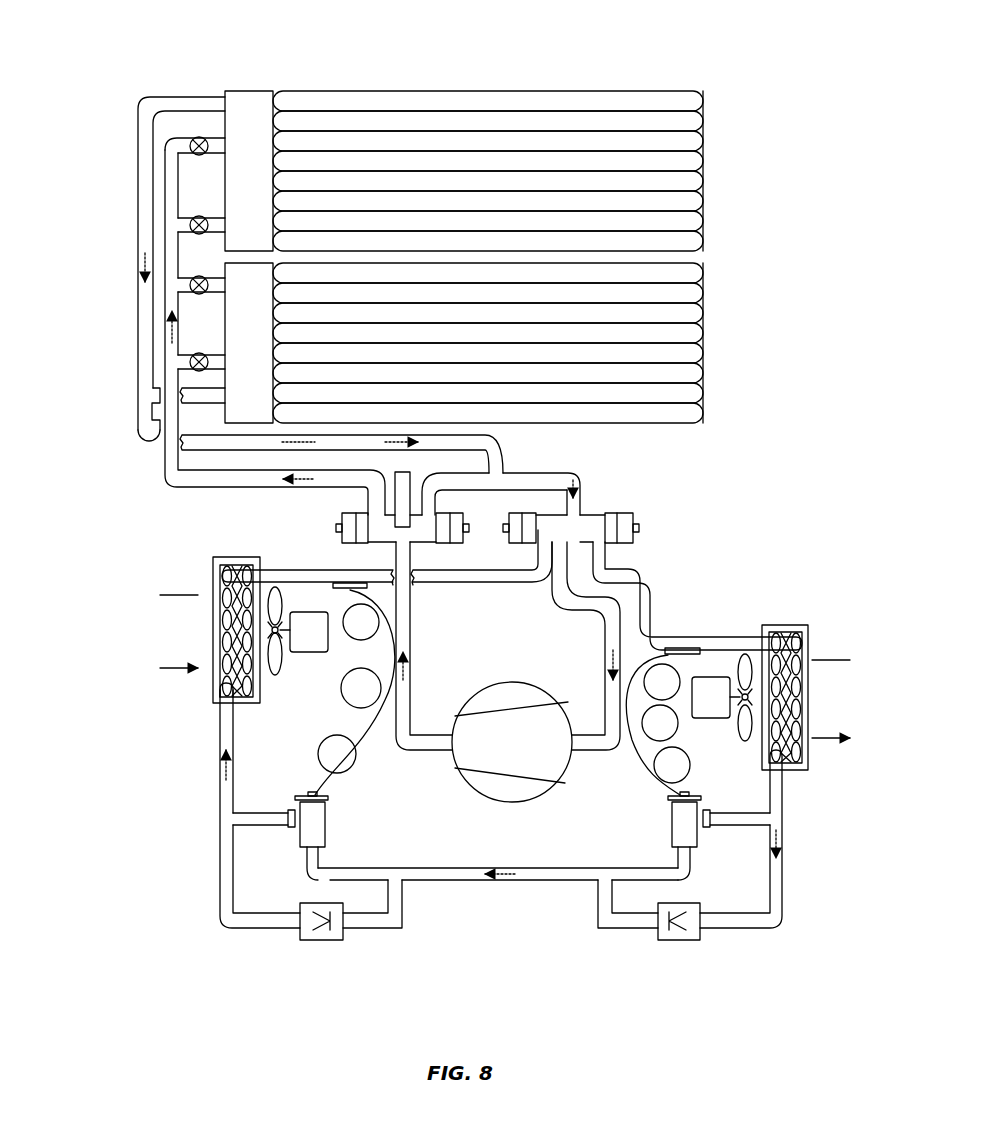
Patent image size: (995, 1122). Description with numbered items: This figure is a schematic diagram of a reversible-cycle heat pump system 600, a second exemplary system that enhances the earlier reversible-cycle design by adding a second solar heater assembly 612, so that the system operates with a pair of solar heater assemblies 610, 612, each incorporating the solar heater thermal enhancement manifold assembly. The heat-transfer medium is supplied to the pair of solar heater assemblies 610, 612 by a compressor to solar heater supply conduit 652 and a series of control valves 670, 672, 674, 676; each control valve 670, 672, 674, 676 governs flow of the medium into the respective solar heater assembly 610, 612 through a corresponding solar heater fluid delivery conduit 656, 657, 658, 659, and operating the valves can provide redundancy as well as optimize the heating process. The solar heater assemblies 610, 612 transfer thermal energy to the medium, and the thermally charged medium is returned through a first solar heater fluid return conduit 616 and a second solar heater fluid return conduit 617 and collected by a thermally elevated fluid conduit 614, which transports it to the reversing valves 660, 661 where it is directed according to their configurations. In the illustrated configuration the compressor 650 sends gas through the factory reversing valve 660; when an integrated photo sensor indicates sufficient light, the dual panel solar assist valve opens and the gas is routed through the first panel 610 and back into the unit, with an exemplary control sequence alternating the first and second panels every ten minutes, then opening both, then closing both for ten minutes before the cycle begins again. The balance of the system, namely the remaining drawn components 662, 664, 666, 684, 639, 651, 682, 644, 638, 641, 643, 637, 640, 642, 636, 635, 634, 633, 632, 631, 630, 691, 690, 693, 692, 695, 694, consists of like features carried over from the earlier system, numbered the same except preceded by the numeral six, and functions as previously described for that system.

The reversible-cycle heat pump system 600 is at (770, 128).
The solar heater assembly 610 is at (706, 172).
The second solar heater assembly 612 is at (706, 343).
The thermally elevated fluid conduit 614 is at (140, 393).
The first solar heater fluid return conduit 616 is at (206, 405).
The second solar heater fluid return conduit 617 is at (186, 93).
The compressor to solar heater supply conduit 652 is at (142, 432).
The solar heater fluid delivery conduit 656 is at (213, 356).
The solar heater fluid delivery conduit 657 is at (213, 278).
The solar heater fluid delivery conduit 658 is at (213, 218).
The solar heater fluid delivery conduit 659 is at (214, 138).
The control valve 670 is at (172, 383).
The control valve 672 is at (172, 306).
The control valve 674 is at (172, 245).
The control valve 676 is at (172, 166).
The coolant supply line 664 is at (460, 452).
The coolant line to second three-way valve 662 is at (533, 472).
The valve port stub 666 is at (395, 490).
The reversing valve 661 is at (380, 556).
The factory reversing valve 660 is at (595, 508).
The bypass coolant line 684 is at (270, 571).
The condenser coolant line 639 is at (385, 600).
The pump loop coolant line 651 is at (412, 630).
The pump inlet line 682 is at (568, 605).
The compressor 650 is at (546, 690).
The coolant line to second radiator 644 is at (650, 612).
The evaporator coil connection 638 is at (688, 650).
The first radiator 641 is at (212, 622).
The first fan 643 is at (308, 653).
The first evaporator coil 637 is at (368, 760).
The second radiator 640 is at (810, 690).
The second fan 642 is at (712, 718).
The second evaporator coil 636 is at (645, 760).
The first radiator outlet line 635 is at (218, 770).
The second radiator outlet line 634 is at (783, 783).
The first expansion valve inlet line 633 is at (243, 828).
The second expansion valve inlet line 632 is at (750, 827).
The first expansion valve 631 is at (328, 814).
The second expansion valve 630 is at (670, 814).
The first return line 691 is at (220, 862).
The second return line 690 is at (785, 878).
The first check valve 693 is at (325, 942).
The second check valve 692 is at (678, 942).
The first check valve outlet line 695 is at (376, 930).
The second check valve outlet line 694 is at (633, 930).